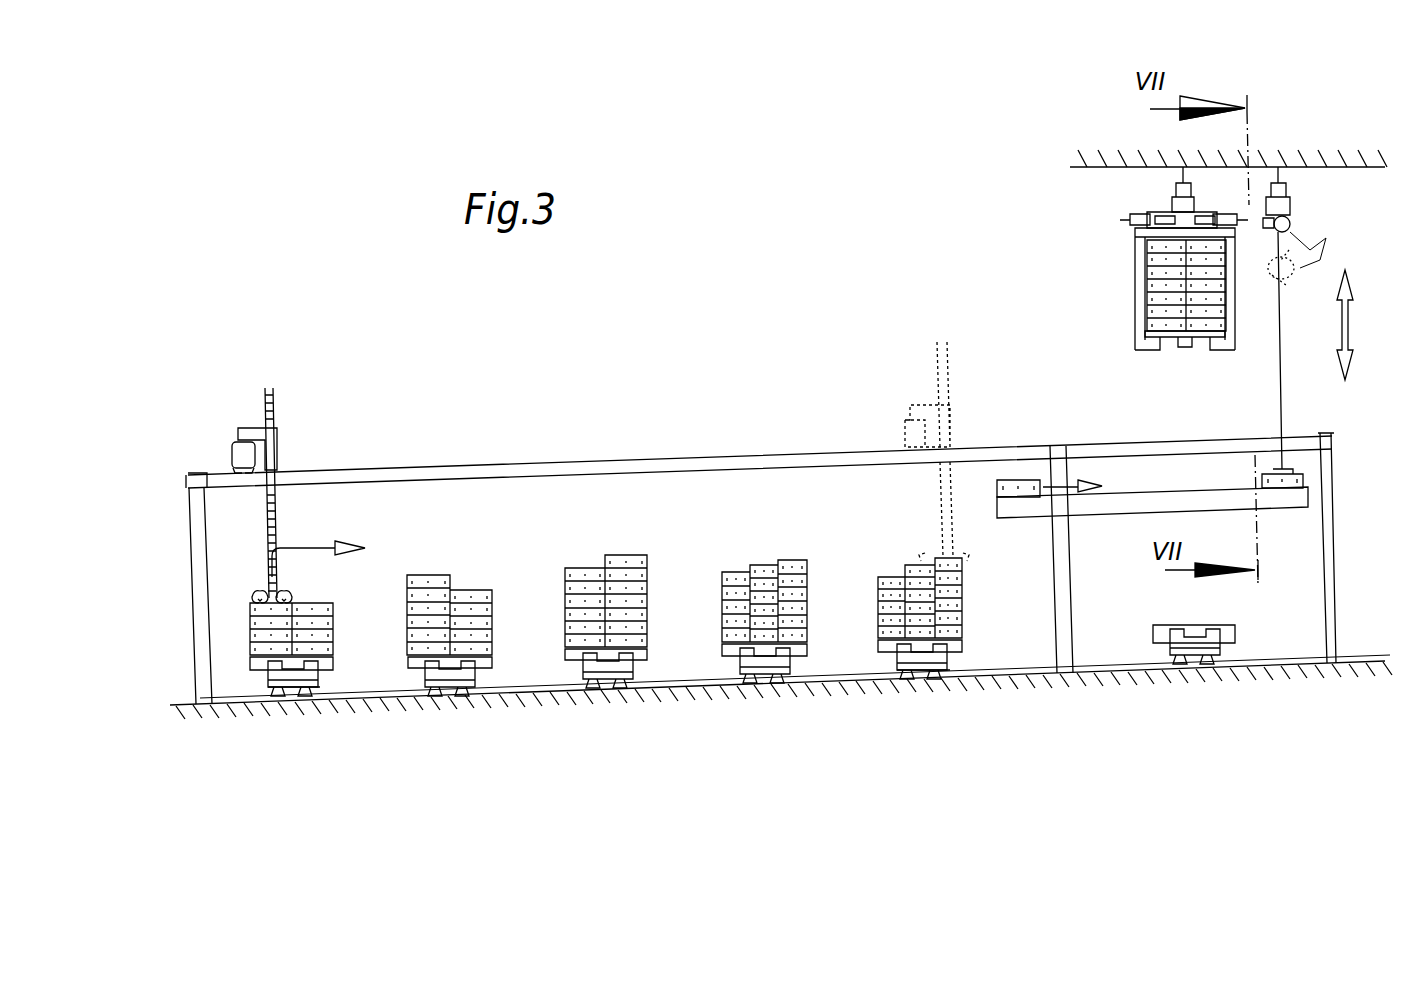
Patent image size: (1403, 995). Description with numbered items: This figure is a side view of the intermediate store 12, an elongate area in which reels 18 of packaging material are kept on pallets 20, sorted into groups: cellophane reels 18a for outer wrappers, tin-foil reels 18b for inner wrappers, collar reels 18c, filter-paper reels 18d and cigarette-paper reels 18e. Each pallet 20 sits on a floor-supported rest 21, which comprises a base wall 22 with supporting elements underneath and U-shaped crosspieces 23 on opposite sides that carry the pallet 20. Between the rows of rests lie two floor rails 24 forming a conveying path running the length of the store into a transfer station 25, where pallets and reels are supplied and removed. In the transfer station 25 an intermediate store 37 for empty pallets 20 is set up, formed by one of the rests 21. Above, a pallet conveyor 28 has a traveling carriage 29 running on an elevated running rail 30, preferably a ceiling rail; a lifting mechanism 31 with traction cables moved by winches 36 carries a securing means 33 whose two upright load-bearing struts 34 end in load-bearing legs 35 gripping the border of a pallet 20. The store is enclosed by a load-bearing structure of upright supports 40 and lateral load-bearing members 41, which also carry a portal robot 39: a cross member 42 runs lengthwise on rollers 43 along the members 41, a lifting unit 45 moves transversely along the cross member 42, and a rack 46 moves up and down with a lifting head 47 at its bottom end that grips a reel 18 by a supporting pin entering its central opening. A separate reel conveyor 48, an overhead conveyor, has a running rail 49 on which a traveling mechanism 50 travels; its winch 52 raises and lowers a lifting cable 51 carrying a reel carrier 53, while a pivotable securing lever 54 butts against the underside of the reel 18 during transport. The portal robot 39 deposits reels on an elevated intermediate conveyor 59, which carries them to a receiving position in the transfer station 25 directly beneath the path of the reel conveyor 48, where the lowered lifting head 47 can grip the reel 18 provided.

The intermediate store 12 is at (778, 380).
The reels 18 is at (1016, 490).
The cellophane reels 18a is at (885, 620).
The tin-foil reels 18b is at (807, 607).
The collar reels 18c is at (647, 620).
The filter-paper reels 18d is at (490, 612).
The cigarette-paper reels 18e is at (333, 617).
The pallets 20 is at (580, 692).
The rests 21 is at (452, 690).
The base wall 22 is at (921, 682).
The crosspieces 23 is at (306, 684).
The floor rails 24 is at (407, 698).
The transfer station 25 is at (1156, 720).
The pallet conveyor 28 is at (1097, 207).
The traveling carriage 29 is at (1138, 189).
The running rail 30 is at (1183, 167).
The lifting mechanism 31 is at (1127, 289).
The securing means 33 is at (1135, 318).
The load-bearing struts 34 is at (1135, 276).
The load-bearing legs 35 is at (1228, 350).
The winches 36 is at (1160, 213).
The intermediate store for empty pallets 37 is at (1262, 628).
The portal robot 39 is at (288, 444).
The upright supports 40 is at (198, 677).
The load-bearing members 41 is at (611, 462).
The cross member 42 is at (240, 442).
The rollers 43 is at (232, 464).
The lifting unit 45 is at (307, 462).
The rack 46 is at (300, 501).
The lifting head 47 is at (270, 598).
The reel conveyor 48 is at (1332, 182).
The running rail 49 is at (1279, 167).
The traveling mechanism 50 is at (1292, 222).
The lifting cable 51 is at (1283, 372).
The winch 52 is at (1300, 222).
The reel carrier 53 is at (1292, 487).
The securing lever 54 is at (1365, 325).
The intermediate conveyor 59 is at (1133, 542).